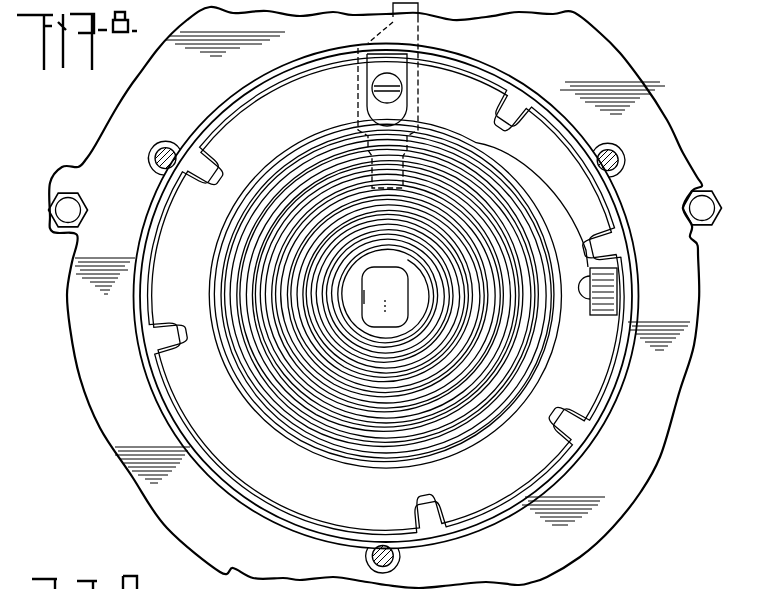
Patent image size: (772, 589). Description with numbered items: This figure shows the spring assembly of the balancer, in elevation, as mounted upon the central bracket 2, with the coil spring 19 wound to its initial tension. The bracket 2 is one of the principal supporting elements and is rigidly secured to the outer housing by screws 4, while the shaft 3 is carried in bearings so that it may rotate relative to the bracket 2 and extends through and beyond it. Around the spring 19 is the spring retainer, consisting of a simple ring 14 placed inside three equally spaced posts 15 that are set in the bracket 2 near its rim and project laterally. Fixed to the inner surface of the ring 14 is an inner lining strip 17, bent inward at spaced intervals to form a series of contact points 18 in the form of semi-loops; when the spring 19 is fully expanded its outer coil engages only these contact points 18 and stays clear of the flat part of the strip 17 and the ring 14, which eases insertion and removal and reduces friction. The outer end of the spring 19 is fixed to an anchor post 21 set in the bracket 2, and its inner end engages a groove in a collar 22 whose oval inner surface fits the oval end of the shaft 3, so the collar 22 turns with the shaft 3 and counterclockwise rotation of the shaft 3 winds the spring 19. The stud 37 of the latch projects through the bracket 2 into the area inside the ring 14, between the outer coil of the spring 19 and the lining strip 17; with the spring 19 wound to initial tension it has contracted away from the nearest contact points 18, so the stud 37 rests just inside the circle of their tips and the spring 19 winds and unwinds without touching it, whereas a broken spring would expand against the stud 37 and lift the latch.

The central bracket 2 is at (676, 395).
The shaft 3 is at (364, 297).
The screws 4 is at (52, 210).
The spring retainer ring 14 is at (516, 87).
The posts 15 is at (178, 124).
The inner lining strip 17 is at (470, 62).
The contact points 18 is at (196, 180).
The coil spring 19 is at (298, 128).
The anchor post 21 is at (600, 294).
The collar 22 is at (385, 297).
The stud 37 is at (375, 87).